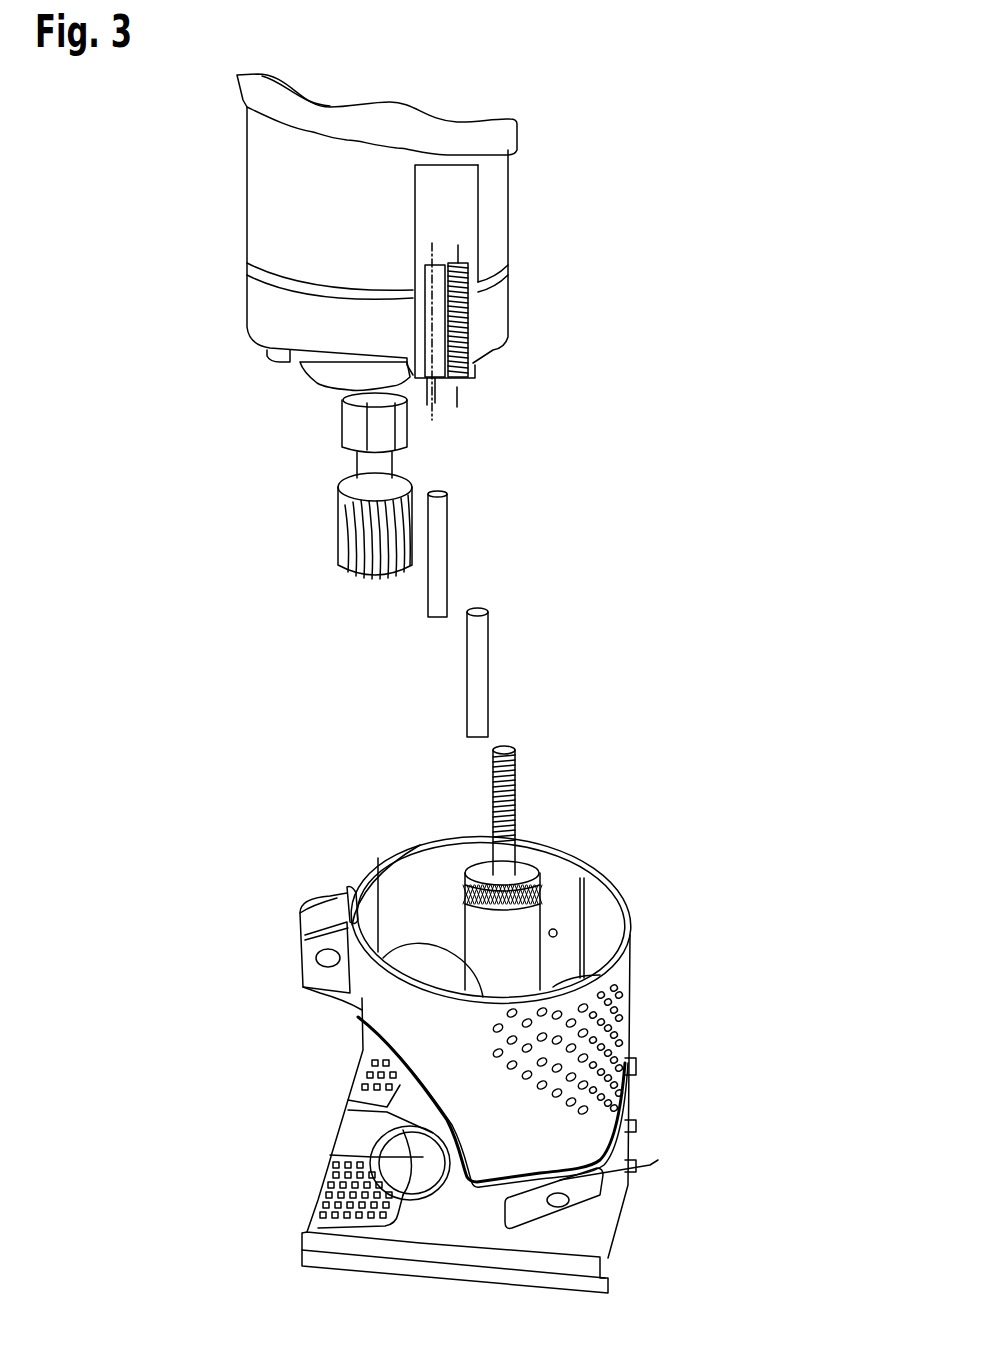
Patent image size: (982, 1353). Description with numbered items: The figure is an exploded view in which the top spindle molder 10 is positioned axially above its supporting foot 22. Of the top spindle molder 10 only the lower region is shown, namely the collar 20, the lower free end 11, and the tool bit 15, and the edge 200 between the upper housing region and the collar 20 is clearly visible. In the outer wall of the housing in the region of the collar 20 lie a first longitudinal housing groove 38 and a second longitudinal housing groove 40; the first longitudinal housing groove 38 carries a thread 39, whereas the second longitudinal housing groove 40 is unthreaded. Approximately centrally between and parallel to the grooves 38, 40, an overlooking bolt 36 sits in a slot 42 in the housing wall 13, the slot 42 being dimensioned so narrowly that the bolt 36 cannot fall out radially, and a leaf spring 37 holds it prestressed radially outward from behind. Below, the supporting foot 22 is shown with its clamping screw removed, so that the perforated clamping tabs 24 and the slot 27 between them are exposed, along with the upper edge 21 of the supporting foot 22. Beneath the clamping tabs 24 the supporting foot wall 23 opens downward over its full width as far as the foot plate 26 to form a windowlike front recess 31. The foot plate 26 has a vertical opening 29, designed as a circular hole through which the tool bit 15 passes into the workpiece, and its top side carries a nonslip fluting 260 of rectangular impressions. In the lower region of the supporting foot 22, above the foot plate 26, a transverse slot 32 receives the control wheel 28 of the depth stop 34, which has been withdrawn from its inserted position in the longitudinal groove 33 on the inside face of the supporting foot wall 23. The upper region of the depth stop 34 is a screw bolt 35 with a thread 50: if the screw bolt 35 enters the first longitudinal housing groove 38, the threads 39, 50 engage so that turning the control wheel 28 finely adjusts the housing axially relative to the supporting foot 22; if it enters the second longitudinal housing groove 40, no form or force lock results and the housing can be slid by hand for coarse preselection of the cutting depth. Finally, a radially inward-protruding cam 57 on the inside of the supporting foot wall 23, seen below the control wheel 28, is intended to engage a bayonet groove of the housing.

The top spindle molder 10 is at (535, 78).
The edge 200 is at (310, 128).
The collar 20 is at (265, 193).
The slot 42 is at (447, 262).
The thread 39 is at (470, 327).
The housing wall 13 is at (262, 307).
The lower free end 11 is at (322, 372).
The first longitudinal housing groove 38 is at (457, 397).
The second longitudinal housing groove 40 is at (431, 408).
The tool bit 15 is at (352, 487).
The leaf spring 37 is at (443, 557).
The overlooking bolt 36 is at (482, 660).
The screw bolt 35 is at (508, 750).
The depth stop 34 is at (521, 784).
The thread 50 is at (478, 862).
The cam 57 is at (553, 930).
The control wheel 28 is at (475, 873).
The upper edge 21 is at (388, 851).
The slot 27 is at (301, 904).
The supporting foot wall 23 is at (623, 913).
The clamping tabs 24 is at (317, 970).
The longitudinal groove 33 is at (552, 988).
The supporting foot 22 is at (613, 1038).
The front recess 31 is at (306, 1137).
The vertical opening 29 is at (437, 1162).
The fluting 260 is at (320, 1210).
The foot plate 26 is at (320, 1213).
The transverse slot 32 is at (585, 1195).